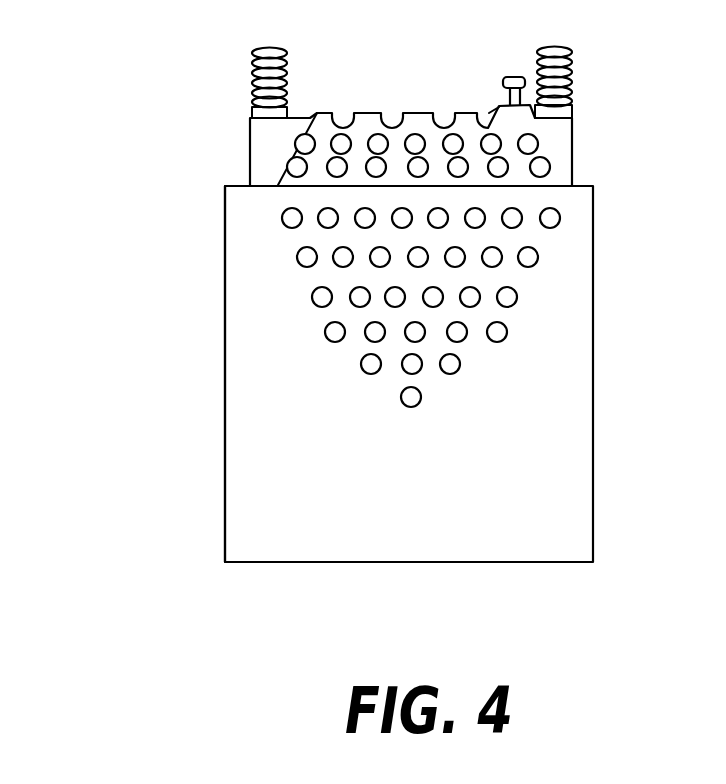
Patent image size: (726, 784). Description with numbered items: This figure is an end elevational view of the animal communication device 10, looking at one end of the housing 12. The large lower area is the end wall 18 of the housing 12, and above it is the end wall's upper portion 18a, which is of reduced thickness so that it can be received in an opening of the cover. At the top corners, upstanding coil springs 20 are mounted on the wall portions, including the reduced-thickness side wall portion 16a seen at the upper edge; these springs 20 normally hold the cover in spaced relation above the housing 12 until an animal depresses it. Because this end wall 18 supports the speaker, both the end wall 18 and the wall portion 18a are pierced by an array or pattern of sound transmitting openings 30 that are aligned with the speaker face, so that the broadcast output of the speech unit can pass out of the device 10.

The animal communication device 10 is at (168, 482).
The housing 12 is at (243, 382).
The upper portion of side wall 16a is at (510, 77).
The end wall 18 is at (543, 358).
The upper portion of end wall 18a is at (572, 155).
The coil springs 20 is at (250, 85).
The sound transmitting openings 30 is at (383, 113).